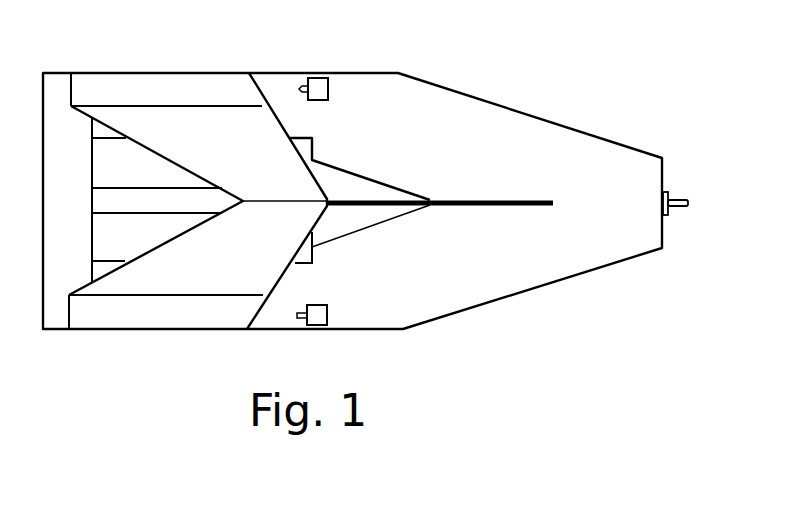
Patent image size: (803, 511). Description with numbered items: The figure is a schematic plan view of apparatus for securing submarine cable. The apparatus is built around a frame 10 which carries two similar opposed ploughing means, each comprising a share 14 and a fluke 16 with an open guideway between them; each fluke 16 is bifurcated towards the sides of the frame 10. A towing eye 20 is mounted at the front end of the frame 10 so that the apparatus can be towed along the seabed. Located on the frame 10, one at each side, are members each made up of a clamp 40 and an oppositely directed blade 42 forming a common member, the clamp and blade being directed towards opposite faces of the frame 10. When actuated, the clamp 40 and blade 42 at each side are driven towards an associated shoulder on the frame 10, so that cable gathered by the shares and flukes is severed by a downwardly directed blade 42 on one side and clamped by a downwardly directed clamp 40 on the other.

The frame 10 is at (502, 178).
The share 14 is at (434, 207).
The fluke 16 is at (138, 113).
The towing eye 20 is at (676, 207).
The clamp 40 is at (297, 316).
The blade 42 is at (304, 87).